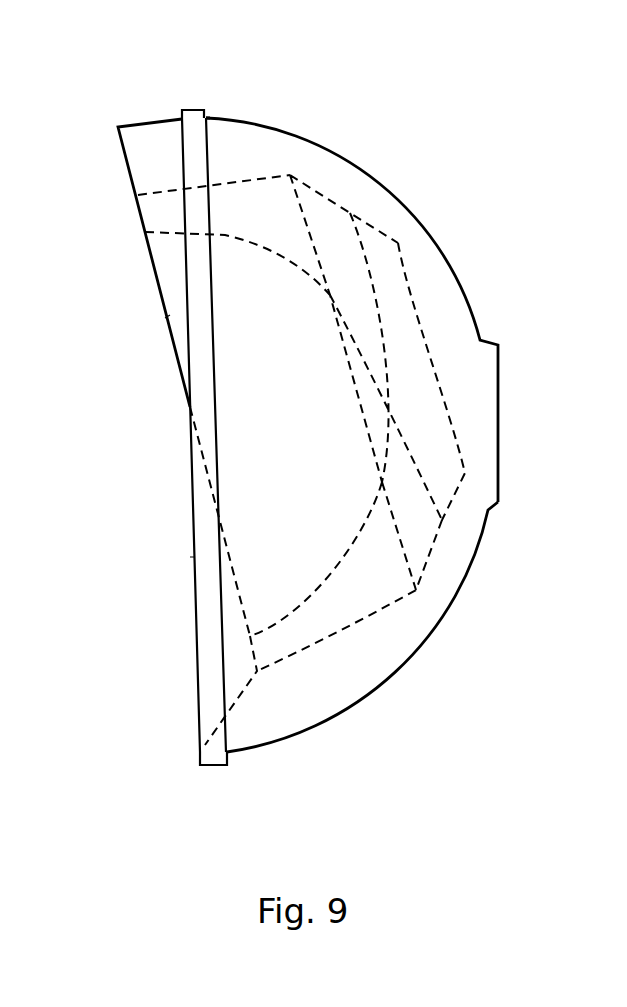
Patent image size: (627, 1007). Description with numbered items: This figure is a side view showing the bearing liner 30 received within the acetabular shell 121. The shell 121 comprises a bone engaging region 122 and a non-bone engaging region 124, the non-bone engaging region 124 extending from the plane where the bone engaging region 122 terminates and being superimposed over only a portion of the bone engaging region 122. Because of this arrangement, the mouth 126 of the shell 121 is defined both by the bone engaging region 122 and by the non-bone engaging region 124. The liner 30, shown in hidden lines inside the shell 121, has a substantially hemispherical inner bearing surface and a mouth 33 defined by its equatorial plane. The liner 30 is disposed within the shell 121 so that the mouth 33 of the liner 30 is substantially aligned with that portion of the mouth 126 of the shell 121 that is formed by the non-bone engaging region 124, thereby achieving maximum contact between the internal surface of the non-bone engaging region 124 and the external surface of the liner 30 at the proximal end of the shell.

The acetabular shell 121 is at (475, 255).
The bone engaging region 122 is at (457, 558).
The non-bone engaging region 124 is at (147, 142).
The mouth 126 is at (166, 318).
The liner 30 is at (292, 245).
The mouth 33 is at (243, 615).